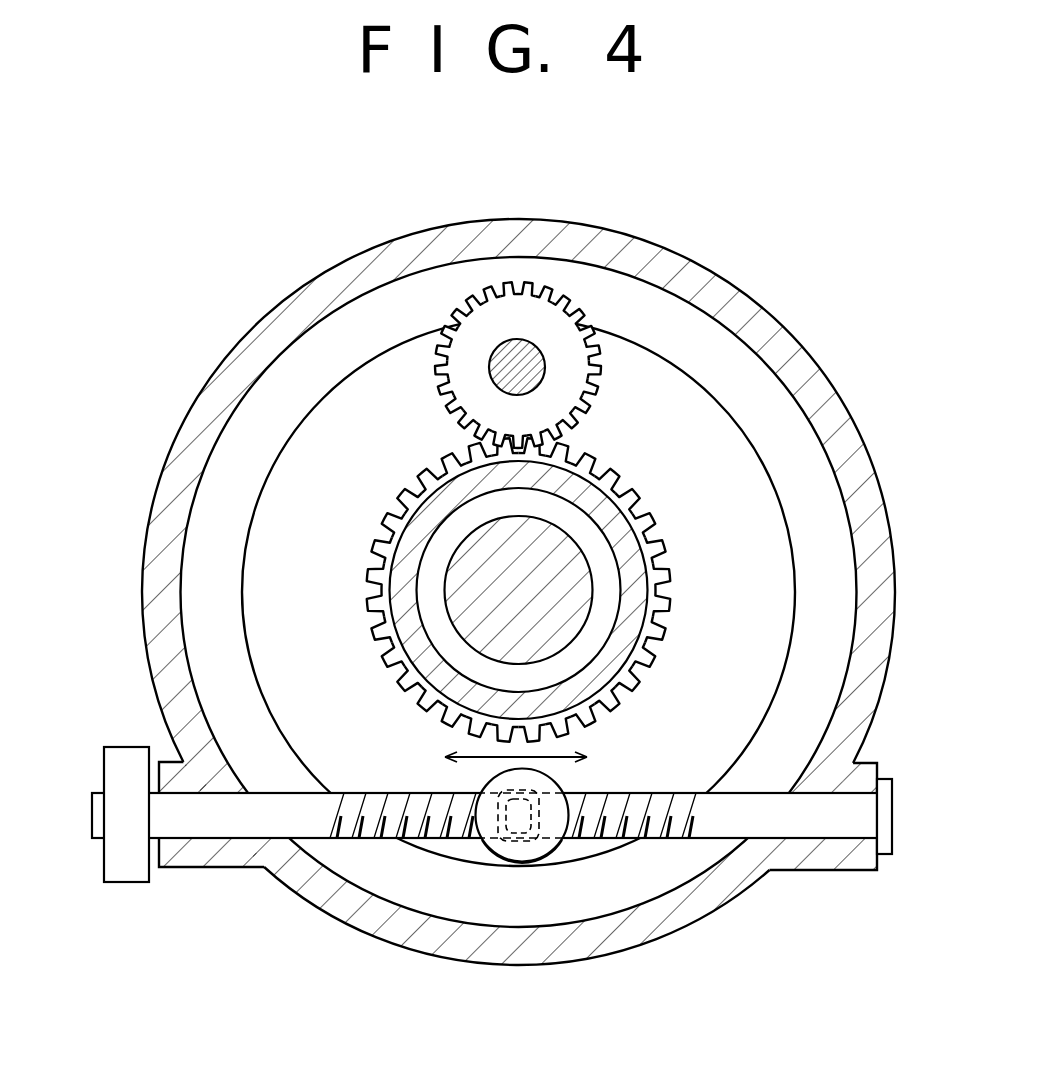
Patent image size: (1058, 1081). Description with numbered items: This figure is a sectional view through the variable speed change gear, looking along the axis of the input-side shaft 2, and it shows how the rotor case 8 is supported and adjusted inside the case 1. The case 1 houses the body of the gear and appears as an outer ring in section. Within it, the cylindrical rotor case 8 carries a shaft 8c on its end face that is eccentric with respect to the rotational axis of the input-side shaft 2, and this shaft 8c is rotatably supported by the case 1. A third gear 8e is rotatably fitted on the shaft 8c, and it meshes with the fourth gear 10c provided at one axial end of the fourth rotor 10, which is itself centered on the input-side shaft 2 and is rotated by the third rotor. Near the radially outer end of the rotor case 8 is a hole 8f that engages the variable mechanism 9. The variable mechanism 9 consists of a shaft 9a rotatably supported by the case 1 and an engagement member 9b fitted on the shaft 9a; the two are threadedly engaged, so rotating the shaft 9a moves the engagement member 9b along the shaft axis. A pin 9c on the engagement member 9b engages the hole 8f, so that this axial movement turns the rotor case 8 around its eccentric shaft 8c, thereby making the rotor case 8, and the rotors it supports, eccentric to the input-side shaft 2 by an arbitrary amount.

The case 1 is at (722, 277).
The input-side shaft 2 is at (558, 612).
The rotor case 8 is at (308, 408).
The shaft 8c is at (496, 352).
The third gear 8e is at (521, 318).
The hole 8f is at (505, 862).
The variable mechanism 9 is at (480, 878).
The shaft 9a is at (728, 820).
The engagement member 9b is at (483, 845).
The pin 9c is at (553, 872).
The fourth rotor 10 is at (518, 550).
The fourth gear 10c is at (633, 498).